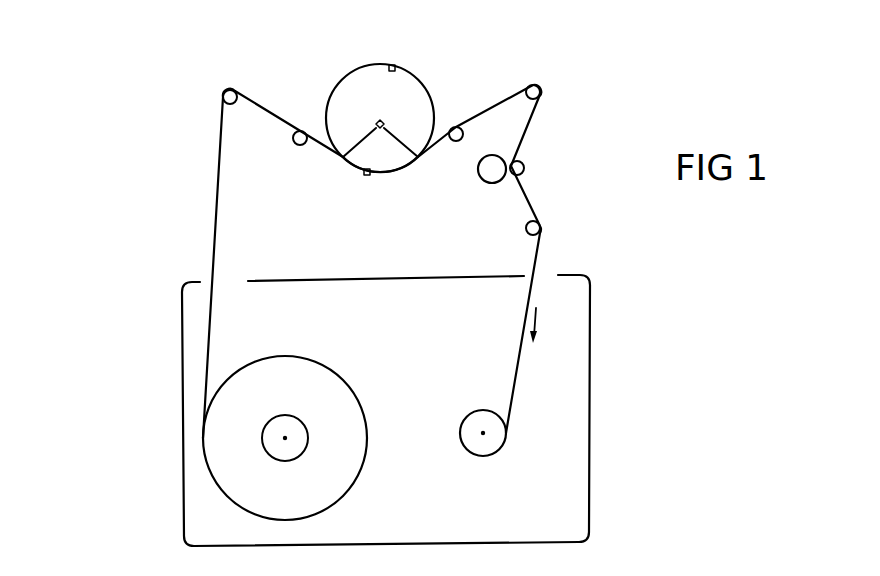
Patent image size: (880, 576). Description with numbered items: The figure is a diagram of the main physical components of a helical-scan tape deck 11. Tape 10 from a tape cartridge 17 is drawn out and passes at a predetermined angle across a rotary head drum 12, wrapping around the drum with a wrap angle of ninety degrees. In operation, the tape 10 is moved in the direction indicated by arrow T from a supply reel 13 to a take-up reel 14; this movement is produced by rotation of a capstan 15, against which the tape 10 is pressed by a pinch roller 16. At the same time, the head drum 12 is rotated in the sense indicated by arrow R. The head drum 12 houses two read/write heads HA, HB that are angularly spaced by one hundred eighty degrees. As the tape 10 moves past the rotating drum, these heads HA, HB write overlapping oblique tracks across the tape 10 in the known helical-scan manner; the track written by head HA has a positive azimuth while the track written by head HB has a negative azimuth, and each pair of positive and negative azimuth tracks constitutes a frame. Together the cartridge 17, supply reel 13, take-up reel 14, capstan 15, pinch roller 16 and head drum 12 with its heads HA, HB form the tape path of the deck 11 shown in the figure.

The tape 10 is at (220, 140).
The helical-scan tape deck 11 is at (155, 257).
The rotary head drum 12 is at (343, 78).
The supply reel 13 is at (344, 462).
The take-up reel 14 is at (478, 450).
The capstan 15 is at (525, 168).
The pinch roller 16 is at (487, 180).
The tape cartridge 17 is at (182, 423).
The read/write head HA is at (367, 177).
The read/write head HB is at (398, 67).
The arrow indicating head drum rotation sense R is at (357, 49).
The arrow indicating tape movement direction T is at (200, 193).